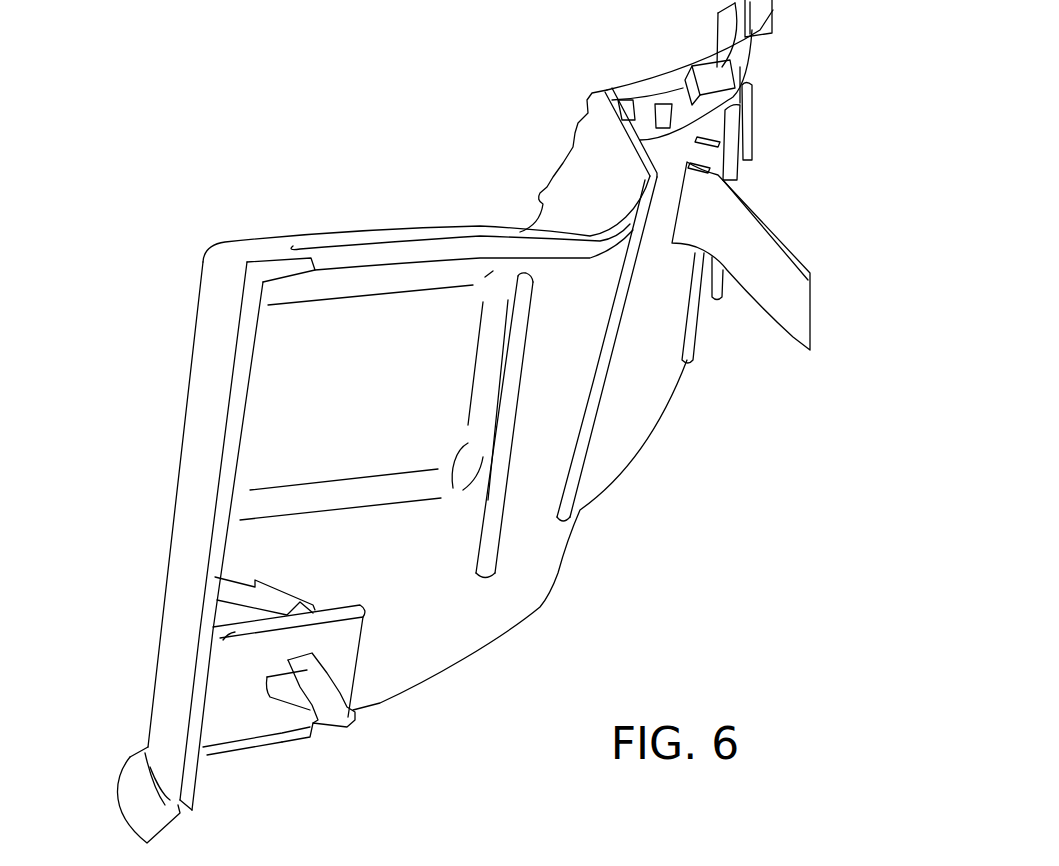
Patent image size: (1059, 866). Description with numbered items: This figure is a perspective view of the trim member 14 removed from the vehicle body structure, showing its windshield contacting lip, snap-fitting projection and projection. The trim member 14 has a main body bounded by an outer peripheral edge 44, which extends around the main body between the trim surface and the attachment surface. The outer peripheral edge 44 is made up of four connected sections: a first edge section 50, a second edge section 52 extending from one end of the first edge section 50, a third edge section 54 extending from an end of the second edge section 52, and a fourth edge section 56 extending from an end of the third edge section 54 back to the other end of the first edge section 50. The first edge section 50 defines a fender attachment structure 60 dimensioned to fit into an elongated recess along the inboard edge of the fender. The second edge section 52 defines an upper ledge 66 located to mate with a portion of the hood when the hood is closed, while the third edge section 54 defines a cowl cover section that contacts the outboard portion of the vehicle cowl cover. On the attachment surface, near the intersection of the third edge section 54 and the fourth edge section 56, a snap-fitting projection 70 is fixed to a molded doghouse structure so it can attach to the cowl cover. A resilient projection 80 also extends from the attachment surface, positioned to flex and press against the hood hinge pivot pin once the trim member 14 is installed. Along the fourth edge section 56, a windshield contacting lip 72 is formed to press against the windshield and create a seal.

The trim member 14 is at (518, 78).
The outer peripheral edge 44 is at (606, 84).
The first edge section 50 is at (673, 88).
The second edge section 52 is at (393, 230).
The third edge section 54 is at (222, 473).
The fourth edge section 56 is at (523, 622).
The fender attachment structure 60 is at (752, 38).
The upper ledge 66 is at (543, 223).
The snap-fitting projection 70 is at (322, 717).
The windshield contacting lip 72 is at (133, 793).
The projection 80 is at (783, 297).